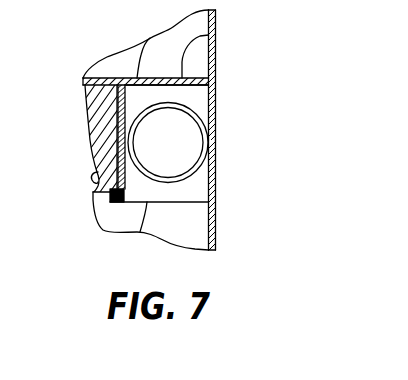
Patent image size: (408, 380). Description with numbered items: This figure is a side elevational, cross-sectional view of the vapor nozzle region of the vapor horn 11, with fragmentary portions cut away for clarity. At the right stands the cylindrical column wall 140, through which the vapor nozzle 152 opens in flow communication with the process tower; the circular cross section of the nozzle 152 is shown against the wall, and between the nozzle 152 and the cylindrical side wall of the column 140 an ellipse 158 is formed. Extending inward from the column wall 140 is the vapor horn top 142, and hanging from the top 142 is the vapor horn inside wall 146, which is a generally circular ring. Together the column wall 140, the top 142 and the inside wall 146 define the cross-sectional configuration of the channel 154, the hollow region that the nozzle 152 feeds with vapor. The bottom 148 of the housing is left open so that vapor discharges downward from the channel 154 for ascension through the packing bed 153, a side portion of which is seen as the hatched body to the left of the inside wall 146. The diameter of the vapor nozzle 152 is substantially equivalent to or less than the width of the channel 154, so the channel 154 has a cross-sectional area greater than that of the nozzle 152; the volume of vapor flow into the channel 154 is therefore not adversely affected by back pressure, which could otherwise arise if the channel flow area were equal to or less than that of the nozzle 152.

The vapor horn 11 is at (216, 33).
The column wall 140 is at (216, 219).
The top 142 is at (148, 40).
The inside wall 146 is at (93, 175).
The bottom 148 is at (138, 232).
The vapor nozzle 152 is at (199, 108).
The packing bed 153 is at (96, 133).
The channel 154 is at (200, 178).
The ellipse 158 is at (185, 148).